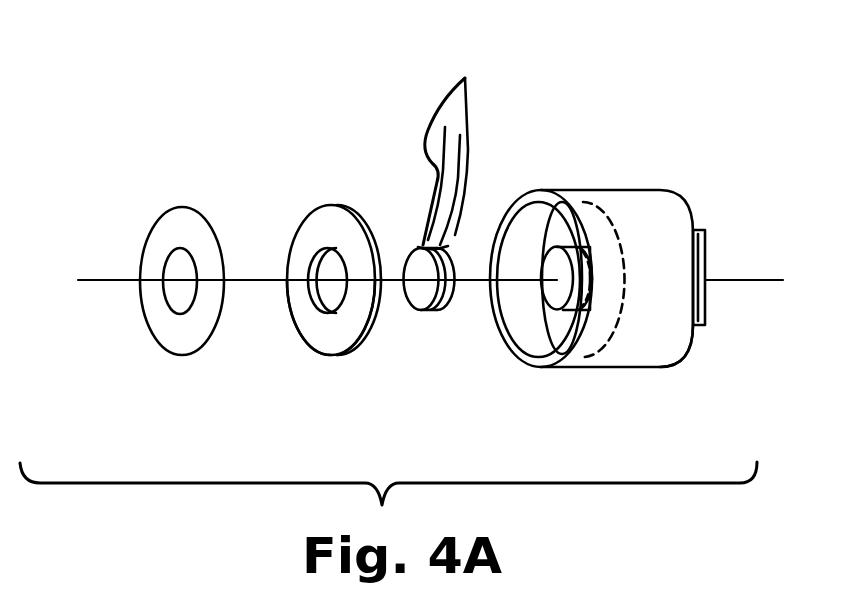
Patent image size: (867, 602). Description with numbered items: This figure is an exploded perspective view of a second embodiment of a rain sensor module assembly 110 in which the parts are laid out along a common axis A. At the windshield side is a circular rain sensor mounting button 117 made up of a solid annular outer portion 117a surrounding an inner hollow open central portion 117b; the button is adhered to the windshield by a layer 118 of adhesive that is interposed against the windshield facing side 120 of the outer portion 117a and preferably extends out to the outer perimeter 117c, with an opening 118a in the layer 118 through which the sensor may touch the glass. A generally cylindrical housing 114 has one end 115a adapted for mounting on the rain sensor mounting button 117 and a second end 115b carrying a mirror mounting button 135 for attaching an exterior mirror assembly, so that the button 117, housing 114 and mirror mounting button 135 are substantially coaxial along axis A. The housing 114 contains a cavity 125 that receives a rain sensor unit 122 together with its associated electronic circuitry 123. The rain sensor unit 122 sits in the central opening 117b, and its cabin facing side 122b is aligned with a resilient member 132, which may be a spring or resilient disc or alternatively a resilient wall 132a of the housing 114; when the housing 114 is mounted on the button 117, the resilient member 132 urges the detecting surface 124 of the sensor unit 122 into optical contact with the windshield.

The rain sensor module assembly 110 is at (668, 124).
The housing 114 is at (645, 212).
The one end of housing 115a is at (510, 344).
The second end of housing 115b is at (683, 348).
The rain sensor mounting button 117 is at (323, 200).
The solid annular outer portion 117a is at (303, 337).
The inner hollow open central portion 117b is at (323, 267).
The outer perimeter 117c is at (365, 333).
The layer of adhesive 118 is at (180, 333).
The opening in adhesive layer 118a is at (177, 288).
The windshield facing side 120 is at (317, 230).
The rain sensor unit 122 is at (455, 233).
The cabin facing side 122b is at (468, 257).
The electronic circuitry 123 is at (459, 144).
The detecting surface 124 is at (416, 297).
The cavity 125 is at (563, 220).
The resilient member 132 is at (578, 345).
The wall 132a is at (530, 333).
The mirror mounting button 135 is at (712, 250).
The common axis A is at (757, 278).